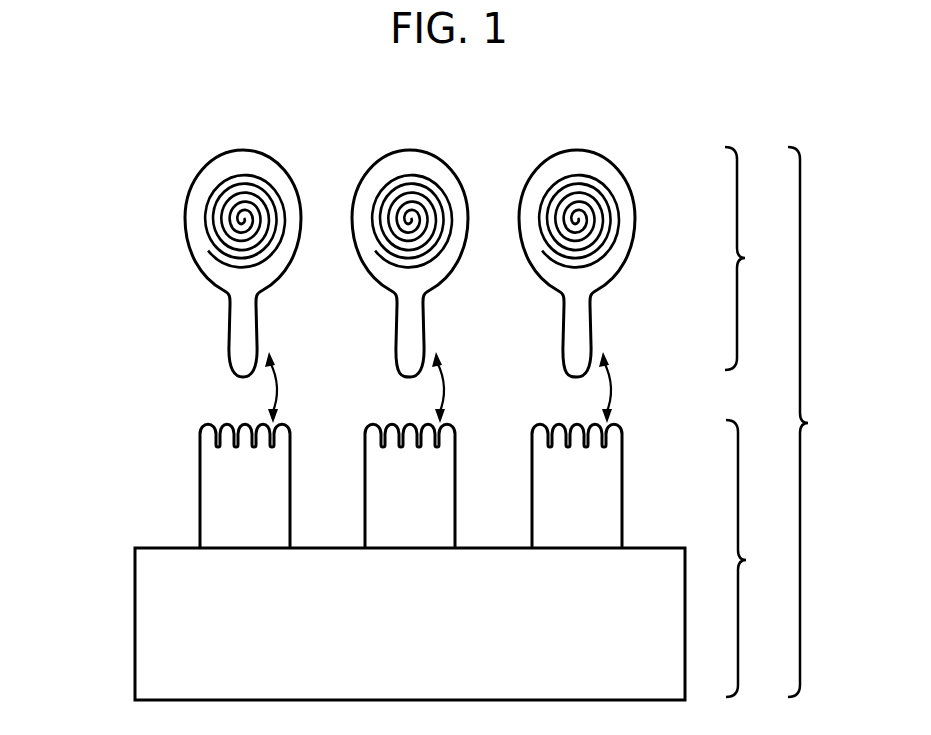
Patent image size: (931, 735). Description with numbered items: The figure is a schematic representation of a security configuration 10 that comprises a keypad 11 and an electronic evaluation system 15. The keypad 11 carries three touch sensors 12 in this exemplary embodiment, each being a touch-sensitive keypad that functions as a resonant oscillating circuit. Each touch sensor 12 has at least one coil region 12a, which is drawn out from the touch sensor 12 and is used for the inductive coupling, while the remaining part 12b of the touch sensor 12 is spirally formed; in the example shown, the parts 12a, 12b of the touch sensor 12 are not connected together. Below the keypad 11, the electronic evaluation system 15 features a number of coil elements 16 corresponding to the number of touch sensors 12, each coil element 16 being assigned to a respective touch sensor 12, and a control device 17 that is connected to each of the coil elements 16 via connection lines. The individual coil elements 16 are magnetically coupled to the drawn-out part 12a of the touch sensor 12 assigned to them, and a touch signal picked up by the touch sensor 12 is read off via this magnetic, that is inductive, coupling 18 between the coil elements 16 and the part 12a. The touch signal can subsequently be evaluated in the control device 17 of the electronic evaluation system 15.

The security configuration 10 is at (816, 422).
The keypad 11 is at (523, 285).
The touch sensor 12 is at (163, 160).
The coil region 12a is at (232, 360).
The spirally formed part 12b is at (210, 222).
The electronic evaluation system 15 is at (575, 558).
The coil element 16 is at (200, 500).
The control device 17 is at (135, 628).
The inductive coupling 18 is at (612, 384).